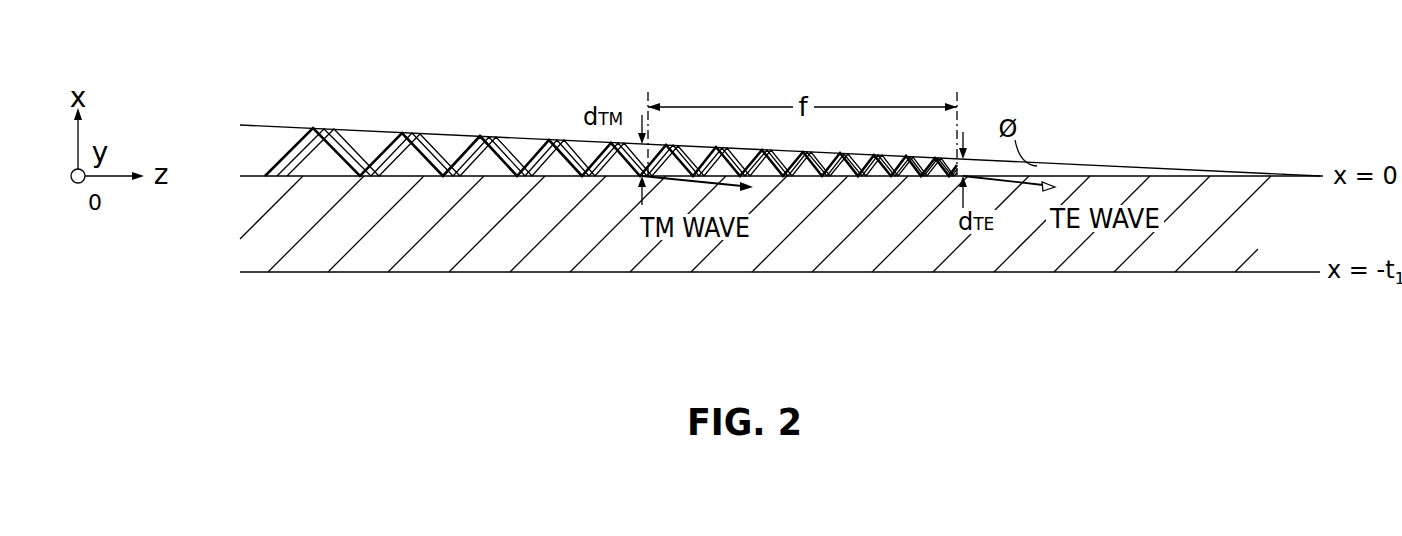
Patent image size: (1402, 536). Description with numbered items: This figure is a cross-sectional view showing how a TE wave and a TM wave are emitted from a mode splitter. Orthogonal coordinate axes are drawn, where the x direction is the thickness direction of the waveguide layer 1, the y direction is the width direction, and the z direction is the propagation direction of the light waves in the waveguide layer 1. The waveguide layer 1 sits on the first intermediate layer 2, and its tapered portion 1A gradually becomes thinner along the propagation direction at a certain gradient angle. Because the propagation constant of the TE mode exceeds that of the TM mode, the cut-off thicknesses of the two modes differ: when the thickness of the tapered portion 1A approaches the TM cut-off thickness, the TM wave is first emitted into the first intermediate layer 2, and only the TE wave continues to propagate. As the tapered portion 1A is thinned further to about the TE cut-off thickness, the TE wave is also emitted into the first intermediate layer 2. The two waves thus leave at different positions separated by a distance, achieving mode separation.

The waveguide layer 1 is at (253, 152).
The tapered portion 1A is at (355, 132).
The first intermediate layer 2 is at (253, 234).